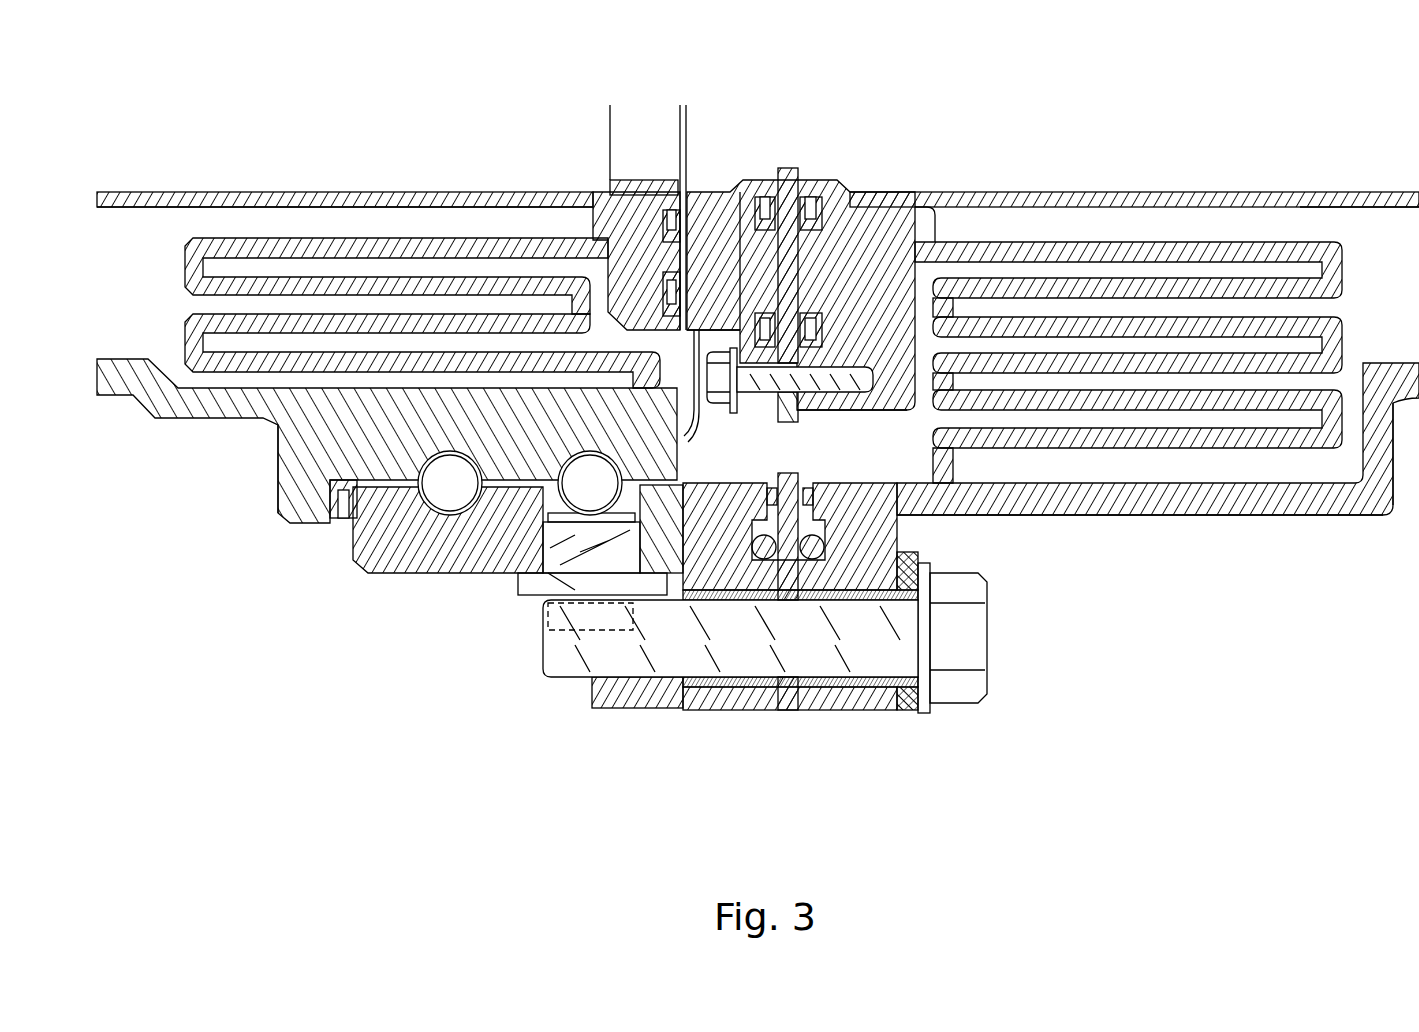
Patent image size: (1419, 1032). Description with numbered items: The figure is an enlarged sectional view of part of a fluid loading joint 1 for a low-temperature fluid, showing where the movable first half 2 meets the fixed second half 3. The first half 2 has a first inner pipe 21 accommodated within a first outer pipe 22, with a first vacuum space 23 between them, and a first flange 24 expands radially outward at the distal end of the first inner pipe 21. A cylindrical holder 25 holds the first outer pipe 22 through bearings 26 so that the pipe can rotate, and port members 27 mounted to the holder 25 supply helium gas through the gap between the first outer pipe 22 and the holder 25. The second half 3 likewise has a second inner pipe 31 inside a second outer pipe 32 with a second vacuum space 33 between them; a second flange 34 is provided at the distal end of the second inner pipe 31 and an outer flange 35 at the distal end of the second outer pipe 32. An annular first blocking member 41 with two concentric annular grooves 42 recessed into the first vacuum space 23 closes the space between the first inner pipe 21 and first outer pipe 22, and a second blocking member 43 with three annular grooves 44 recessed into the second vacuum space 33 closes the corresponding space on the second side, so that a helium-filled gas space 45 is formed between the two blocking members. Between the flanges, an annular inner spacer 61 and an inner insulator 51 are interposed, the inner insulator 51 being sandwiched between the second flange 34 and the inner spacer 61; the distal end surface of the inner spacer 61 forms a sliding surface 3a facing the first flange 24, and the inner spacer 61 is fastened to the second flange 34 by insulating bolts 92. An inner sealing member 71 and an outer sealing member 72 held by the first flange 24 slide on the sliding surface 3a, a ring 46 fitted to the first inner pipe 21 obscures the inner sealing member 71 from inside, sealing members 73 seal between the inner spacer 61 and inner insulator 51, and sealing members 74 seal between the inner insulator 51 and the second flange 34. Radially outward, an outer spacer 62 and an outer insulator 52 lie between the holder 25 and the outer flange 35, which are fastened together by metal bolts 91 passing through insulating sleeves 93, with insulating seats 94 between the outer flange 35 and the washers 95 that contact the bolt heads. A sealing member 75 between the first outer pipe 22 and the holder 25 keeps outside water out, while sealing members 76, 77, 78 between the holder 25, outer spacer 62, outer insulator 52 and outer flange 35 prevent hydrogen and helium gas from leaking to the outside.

The fluid loading joint 1 is at (1196, 636).
The first half 2 is at (210, 432).
The second half 3 is at (1343, 527).
The sliding surface 3a is at (606, 192).
The first inner pipe 21 is at (300, 192).
The first outer pipe 22 is at (303, 432).
The first vacuum space 23 is at (160, 259).
The first flange 24 is at (603, 192).
The holder 25 is at (610, 708).
The bearings 26 is at (580, 492).
The port members 27 is at (532, 585).
The second inner pipe 31 is at (1248, 195).
The second outer pipe 32 is at (1252, 516).
The second vacuum space 33 is at (1384, 262).
The second flange 34 is at (873, 203).
The outer flange 35 is at (877, 706).
The first blocking member 41 is at (385, 245).
The annular groove 42 is at (512, 343).
The second blocking member 43 is at (1135, 250).
The annular groove 44 is at (1022, 400).
The gas space 45 is at (892, 447).
The ring 46 is at (660, 180).
The inner insulator 51 is at (790, 168).
The outer insulator 52 is at (788, 710).
The inner spacer 61 is at (725, 192).
The outer spacer 62 is at (723, 703).
The inner sealing member 71 is at (648, 192).
The outer sealing member 72 is at (697, 345).
The sealing members 73 is at (760, 197).
The sealing members 74 is at (814, 197).
The sealing member 75 is at (338, 512).
The sealing member 76 is at (770, 560).
The sealing member 77 is at (818, 560).
The sealing member 78 is at (813, 498).
The bolts 91 is at (980, 640).
The bolts 92 is at (720, 403).
The sleeves 93 is at (700, 690).
The seats 94 is at (907, 705).
The washers 95 is at (926, 713).